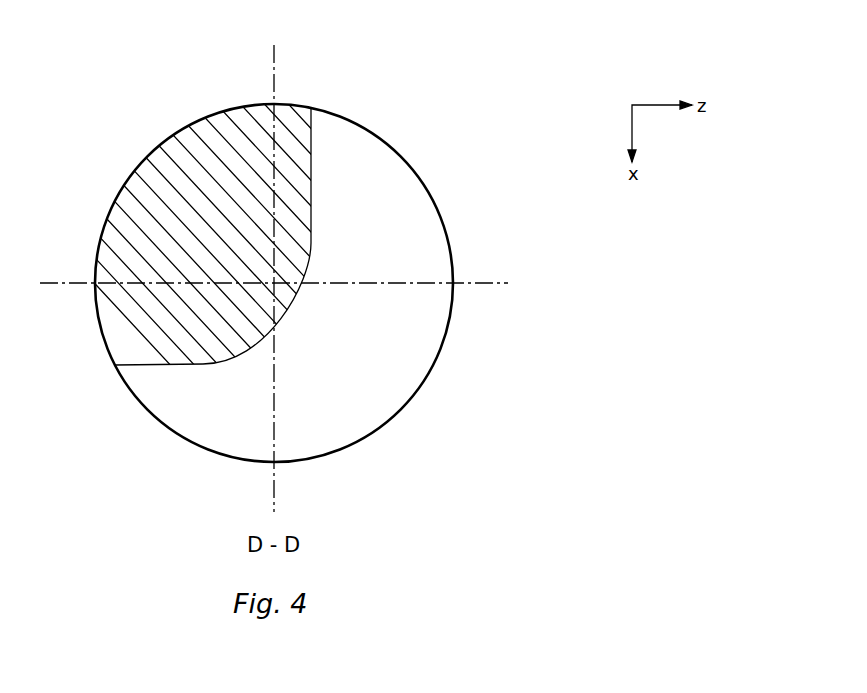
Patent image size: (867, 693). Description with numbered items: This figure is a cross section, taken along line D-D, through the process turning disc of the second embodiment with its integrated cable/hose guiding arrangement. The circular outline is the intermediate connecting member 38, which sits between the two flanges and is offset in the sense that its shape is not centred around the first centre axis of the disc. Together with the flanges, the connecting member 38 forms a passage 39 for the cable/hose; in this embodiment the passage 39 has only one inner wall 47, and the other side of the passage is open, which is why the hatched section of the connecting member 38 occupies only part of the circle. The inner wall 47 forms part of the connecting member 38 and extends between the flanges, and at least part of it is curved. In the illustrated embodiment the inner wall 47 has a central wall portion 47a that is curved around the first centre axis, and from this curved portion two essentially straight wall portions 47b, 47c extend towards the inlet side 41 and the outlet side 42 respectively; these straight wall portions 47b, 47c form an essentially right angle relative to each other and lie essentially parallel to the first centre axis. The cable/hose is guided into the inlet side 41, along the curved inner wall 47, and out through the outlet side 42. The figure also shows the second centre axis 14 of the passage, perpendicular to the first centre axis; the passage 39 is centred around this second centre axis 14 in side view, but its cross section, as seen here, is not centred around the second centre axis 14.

The second centre axis 14 is at (495, 283).
The intermediate connecting member 38 is at (157, 188).
The passage 39 is at (378, 365).
The inlet side 41 is at (387, 183).
The outlet side 42 is at (320, 418).
The inner wall 47 is at (299, 268).
The central wall portion 47a is at (293, 307).
The straight wall portion 47b is at (311, 188).
The straight wall portion 47c is at (158, 365).